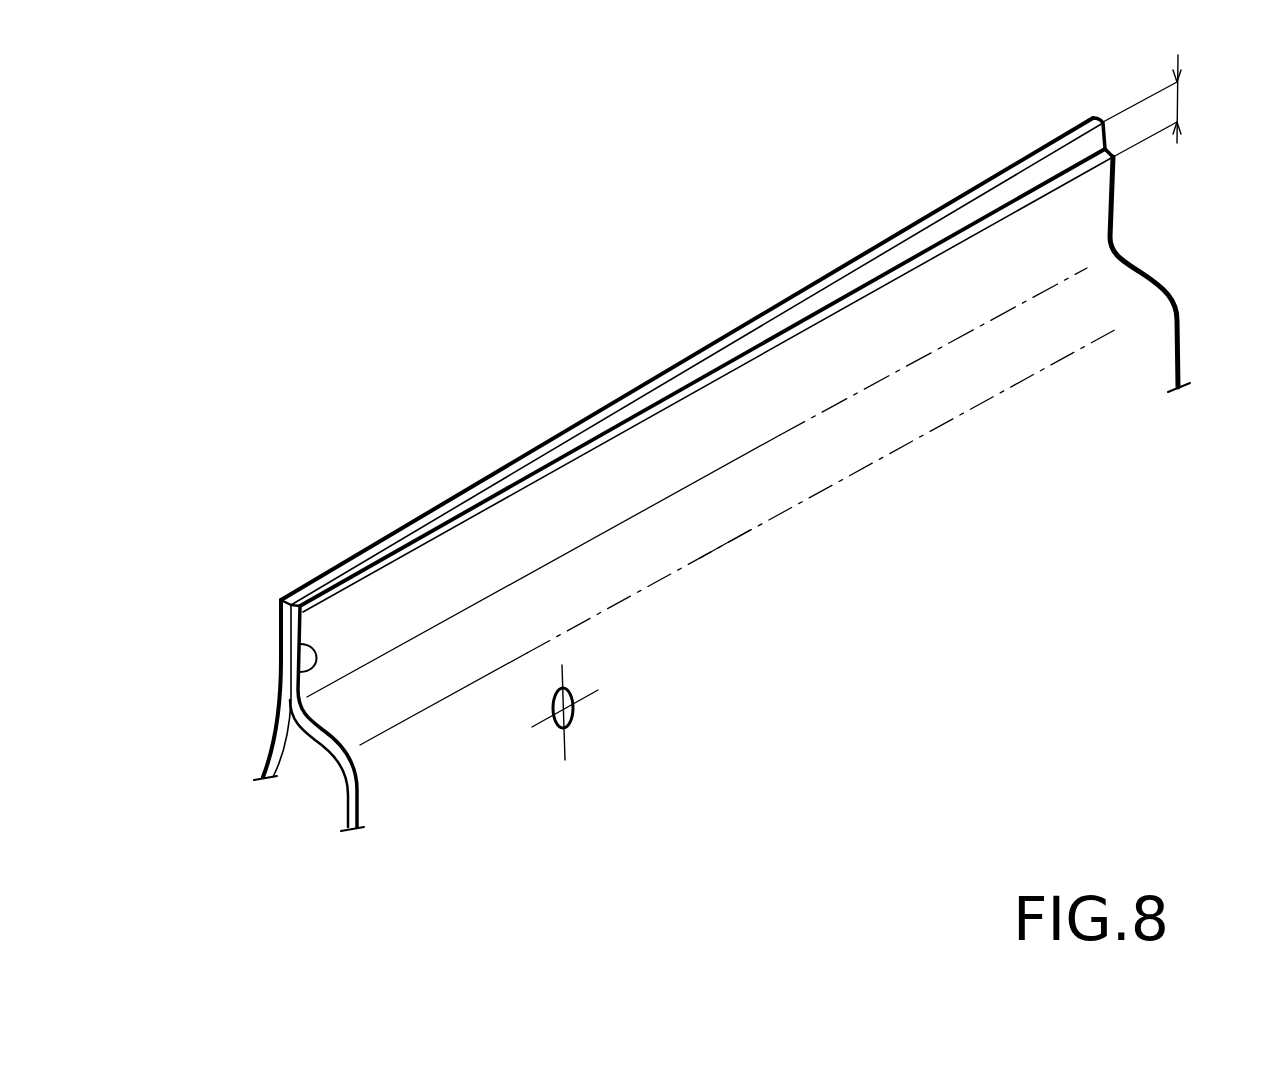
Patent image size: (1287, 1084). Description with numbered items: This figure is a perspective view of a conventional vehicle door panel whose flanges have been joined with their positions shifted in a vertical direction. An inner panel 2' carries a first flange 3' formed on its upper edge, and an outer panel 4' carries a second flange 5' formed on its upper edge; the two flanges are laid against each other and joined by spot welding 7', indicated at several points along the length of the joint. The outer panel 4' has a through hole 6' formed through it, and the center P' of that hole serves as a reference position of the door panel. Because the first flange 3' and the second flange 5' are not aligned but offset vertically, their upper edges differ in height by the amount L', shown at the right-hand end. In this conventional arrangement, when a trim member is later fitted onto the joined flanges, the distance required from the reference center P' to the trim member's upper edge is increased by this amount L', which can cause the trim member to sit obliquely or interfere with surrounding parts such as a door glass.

The inner panel 2' is at (681, 468).
The first flange 3' is at (653, 379).
The outer panel 4' is at (680, 573).
The second flange 5' is at (240, 673).
The through hole 6' is at (615, 659).
The spot welding 7' is at (706, 369).
The center of through hole P' is at (594, 716).
The amount of shift L' is at (1186, 106).